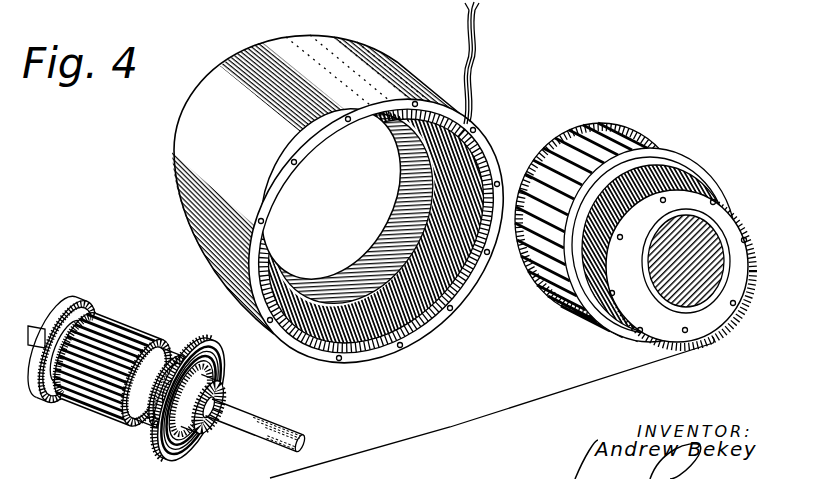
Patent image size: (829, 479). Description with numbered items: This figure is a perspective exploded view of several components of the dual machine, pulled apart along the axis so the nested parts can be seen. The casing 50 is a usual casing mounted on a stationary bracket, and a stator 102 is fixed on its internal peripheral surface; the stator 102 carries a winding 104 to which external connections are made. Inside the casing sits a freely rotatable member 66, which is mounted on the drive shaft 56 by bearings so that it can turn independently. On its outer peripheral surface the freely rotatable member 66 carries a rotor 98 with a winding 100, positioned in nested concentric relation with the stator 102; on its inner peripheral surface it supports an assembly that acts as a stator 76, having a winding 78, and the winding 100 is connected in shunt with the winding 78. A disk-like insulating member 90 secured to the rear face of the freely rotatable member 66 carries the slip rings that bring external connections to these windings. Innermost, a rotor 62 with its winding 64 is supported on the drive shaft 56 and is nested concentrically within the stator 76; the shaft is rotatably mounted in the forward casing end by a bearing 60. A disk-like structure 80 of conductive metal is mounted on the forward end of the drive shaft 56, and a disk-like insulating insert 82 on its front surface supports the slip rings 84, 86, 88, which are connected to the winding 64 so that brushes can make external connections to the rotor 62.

The casing 50 is at (382, 57).
The stator 102 is at (392, 243).
The winding 104 is at (478, 164).
The rotor 62 is at (143, 319).
The winding 64 is at (169, 342).
The disk-like structure 80 is at (206, 343).
The disk-like insulating insert 82 is at (221, 347).
The slip ring 84 is at (198, 437).
The slip ring 86 is at (161, 464).
The slip ring 88 is at (184, 464).
The bearing 60 is at (229, 400).
The drive shaft 56 is at (295, 424).
The freely rotatable member 66 is at (625, 211).
The disk-like insulating member 90 is at (587, 124).
The rotor 98 is at (628, 135).
The winding 100 is at (697, 161).
The stator 76 is at (601, 322).
The winding 78 is at (648, 290).